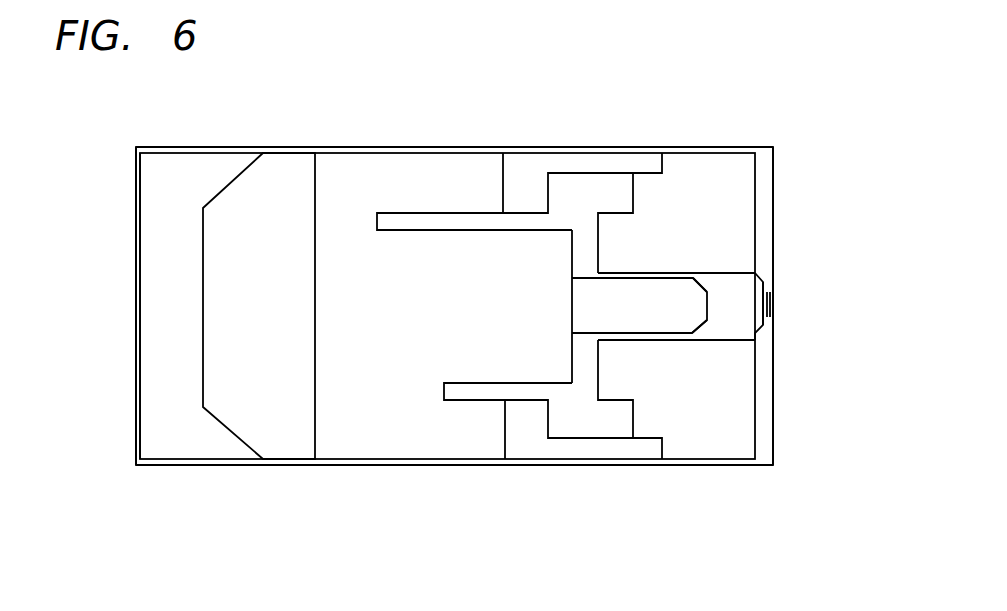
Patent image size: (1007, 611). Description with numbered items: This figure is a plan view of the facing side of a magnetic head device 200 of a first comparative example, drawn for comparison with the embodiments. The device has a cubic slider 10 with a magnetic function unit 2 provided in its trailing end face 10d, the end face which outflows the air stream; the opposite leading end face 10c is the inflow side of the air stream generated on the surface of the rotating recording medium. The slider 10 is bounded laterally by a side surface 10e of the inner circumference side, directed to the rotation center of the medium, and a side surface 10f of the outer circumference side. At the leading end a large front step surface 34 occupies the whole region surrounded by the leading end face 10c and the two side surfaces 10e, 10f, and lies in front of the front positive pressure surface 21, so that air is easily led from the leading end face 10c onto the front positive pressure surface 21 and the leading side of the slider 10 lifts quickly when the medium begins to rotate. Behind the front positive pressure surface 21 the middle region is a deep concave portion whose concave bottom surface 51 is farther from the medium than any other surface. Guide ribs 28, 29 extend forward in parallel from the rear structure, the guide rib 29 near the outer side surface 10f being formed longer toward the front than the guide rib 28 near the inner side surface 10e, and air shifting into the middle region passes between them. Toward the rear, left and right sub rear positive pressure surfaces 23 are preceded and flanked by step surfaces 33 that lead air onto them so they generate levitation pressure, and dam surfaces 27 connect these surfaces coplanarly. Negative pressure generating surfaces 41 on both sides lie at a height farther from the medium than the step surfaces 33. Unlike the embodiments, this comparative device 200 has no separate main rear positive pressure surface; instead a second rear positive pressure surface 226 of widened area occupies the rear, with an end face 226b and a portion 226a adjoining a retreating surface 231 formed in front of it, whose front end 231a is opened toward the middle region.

The magnetic function unit 2 is at (772, 298).
The slider 10 is at (338, 472).
The leading end face 10c is at (137, 352).
The trailing end face 10d is at (773, 372).
The side surface of inner circumference side 10e is at (472, 467).
The side surface of outer circumference side 10f is at (443, 148).
The front positive pressure surface 21 is at (237, 213).
The sub rear positive pressure surface 23 is at (610, 195).
The dam surface 27 is at (580, 252).
The guide rib 28 is at (455, 399).
The guide rib 29 is at (387, 218).
The step surface 33 is at (521, 173).
The front step surface 34 is at (153, 242).
The negative pressure generating surface 41 is at (622, 245).
The concave bottom surface 51 is at (354, 192).
The magnetic head device 200 is at (137, 483).
The second rear positive pressure surface 226 is at (730, 288).
The protrusion contact portion 226a is at (703, 305).
The protrusion end face 226b is at (767, 282).
The retreating surface 231 is at (615, 318).
The front end of retreating surface 231a is at (570, 297).